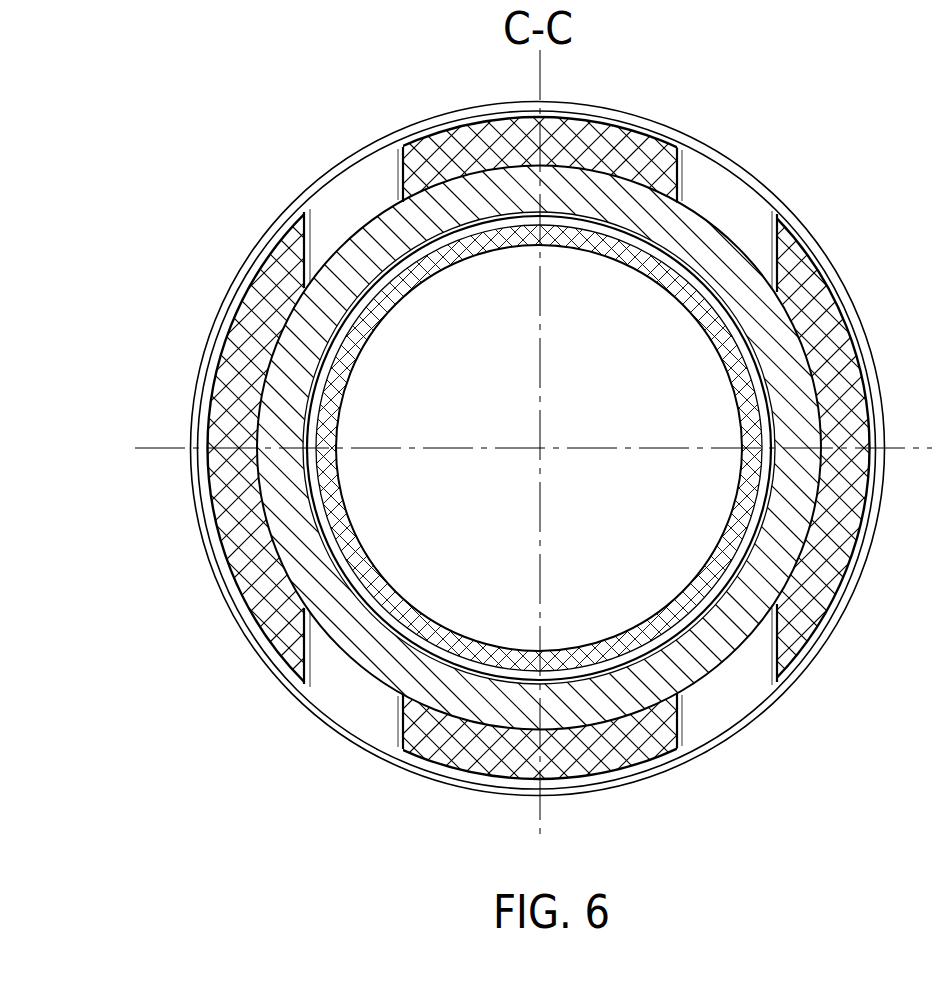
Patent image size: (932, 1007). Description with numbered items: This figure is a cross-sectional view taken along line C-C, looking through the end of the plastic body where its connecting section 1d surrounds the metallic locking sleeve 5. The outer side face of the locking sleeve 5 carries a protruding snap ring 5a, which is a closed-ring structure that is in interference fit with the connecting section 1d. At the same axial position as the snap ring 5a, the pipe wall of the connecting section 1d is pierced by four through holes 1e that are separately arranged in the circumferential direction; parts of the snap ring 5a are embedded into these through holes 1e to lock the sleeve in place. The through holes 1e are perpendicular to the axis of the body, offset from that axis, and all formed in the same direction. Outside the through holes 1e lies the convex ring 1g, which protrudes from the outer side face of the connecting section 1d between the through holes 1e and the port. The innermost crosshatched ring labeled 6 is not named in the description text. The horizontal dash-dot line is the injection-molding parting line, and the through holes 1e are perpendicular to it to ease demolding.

The convex ring 1g is at (213, 350).
The connecting section 1d is at (233, 410).
The through holes 1e is at (353, 192).
The locking sleeve 5 is at (287, 513).
The snap ring 5a is at (740, 236).
The bore ring 6 is at (348, 538).